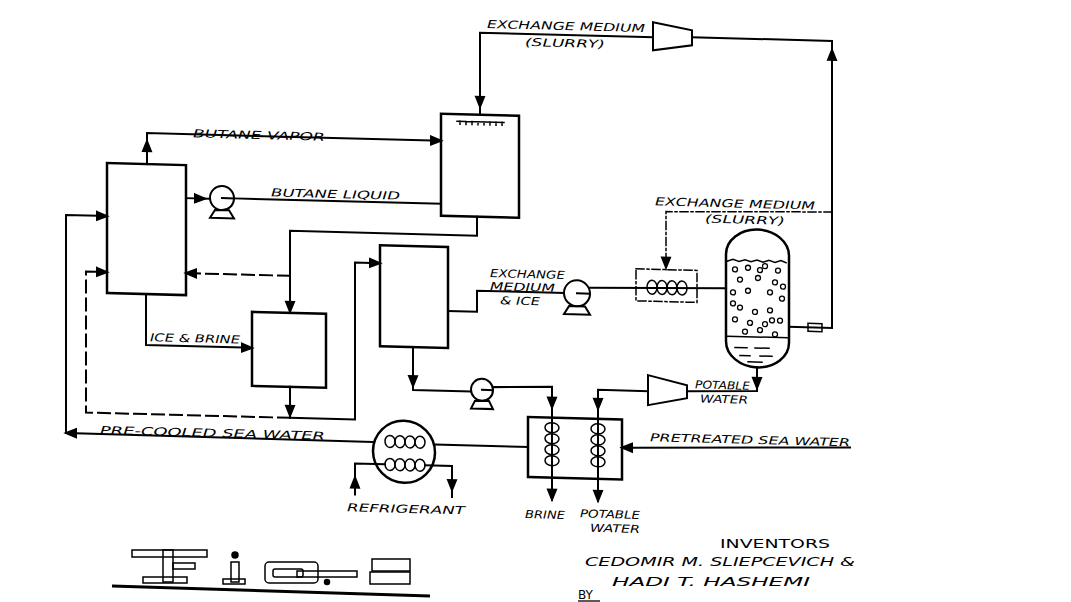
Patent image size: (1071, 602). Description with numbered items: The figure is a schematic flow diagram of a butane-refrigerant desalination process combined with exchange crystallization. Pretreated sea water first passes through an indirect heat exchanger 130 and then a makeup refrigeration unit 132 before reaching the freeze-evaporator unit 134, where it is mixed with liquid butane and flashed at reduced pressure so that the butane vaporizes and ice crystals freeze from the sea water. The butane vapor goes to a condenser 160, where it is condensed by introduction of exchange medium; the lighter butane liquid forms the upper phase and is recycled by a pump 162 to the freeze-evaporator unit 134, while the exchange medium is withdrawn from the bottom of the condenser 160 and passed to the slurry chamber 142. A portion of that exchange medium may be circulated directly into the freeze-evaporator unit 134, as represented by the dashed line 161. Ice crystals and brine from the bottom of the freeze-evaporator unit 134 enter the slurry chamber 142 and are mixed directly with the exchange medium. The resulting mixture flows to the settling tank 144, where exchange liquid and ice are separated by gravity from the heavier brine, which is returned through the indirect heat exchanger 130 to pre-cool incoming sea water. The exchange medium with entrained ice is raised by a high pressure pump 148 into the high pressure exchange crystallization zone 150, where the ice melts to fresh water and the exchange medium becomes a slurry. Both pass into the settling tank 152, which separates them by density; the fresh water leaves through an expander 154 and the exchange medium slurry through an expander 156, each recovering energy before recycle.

The indirect heat exchanger 130 is at (528, 463).
The makeup refrigeration unit 132 is at (412, 427).
The freeze-evaporator unit 134 is at (160, 246).
The slurry chamber 142 is at (309, 359).
The settling tank 144 is at (426, 305).
The high pressure pump 148 is at (590, 300).
The high pressure exchange crystallization zone 150 is at (645, 298).
The settling tank 152 is at (775, 298).
The expander 154 is at (675, 393).
The expander 156 is at (680, 41).
The condenser 160 is at (497, 172).
The dashed line 161 is at (218, 284).
The pump 162 is at (226, 196).